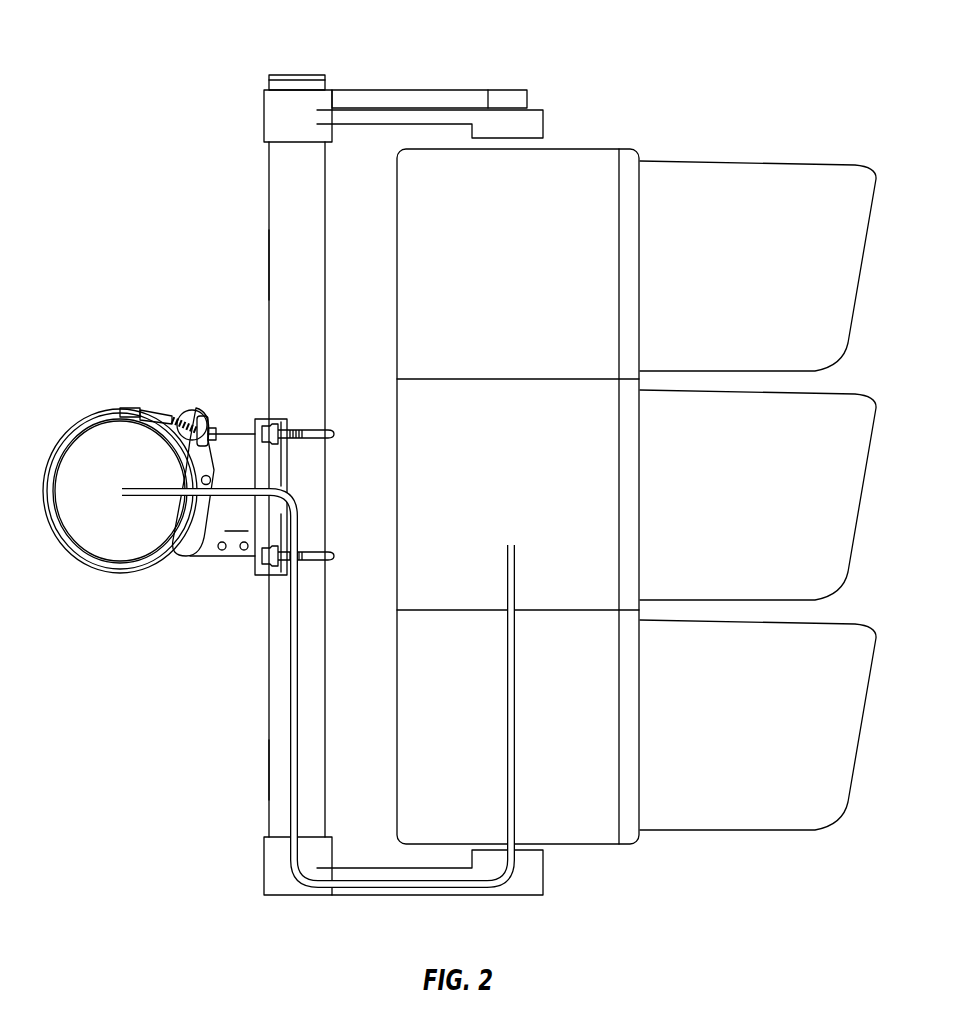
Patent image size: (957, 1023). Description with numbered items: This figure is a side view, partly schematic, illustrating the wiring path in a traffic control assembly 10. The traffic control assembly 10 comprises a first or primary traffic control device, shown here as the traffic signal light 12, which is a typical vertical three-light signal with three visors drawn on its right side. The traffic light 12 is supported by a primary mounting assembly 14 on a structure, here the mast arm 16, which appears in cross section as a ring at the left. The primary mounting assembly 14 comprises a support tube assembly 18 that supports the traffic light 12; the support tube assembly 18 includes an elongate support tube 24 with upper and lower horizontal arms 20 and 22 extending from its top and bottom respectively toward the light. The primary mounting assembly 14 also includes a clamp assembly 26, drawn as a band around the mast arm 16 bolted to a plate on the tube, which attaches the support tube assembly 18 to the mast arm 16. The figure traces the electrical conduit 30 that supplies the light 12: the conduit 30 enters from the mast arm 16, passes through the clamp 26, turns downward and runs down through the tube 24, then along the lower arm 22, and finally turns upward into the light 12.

The traffic control assembly 10 is at (295, 43).
The traffic signal light 12 is at (712, 161).
The primary mounting assembly 14 is at (268, 202).
The mast arm 16 is at (110, 566).
The support tube assembly 18 is at (278, 771).
The upper horizontal arm 20 is at (410, 90).
The lower horizontal arm 22 is at (403, 896).
The elongate support tube 24 is at (268, 263).
The clamp assembly 26 is at (237, 433).
The electrical conduit 30 is at (290, 699).